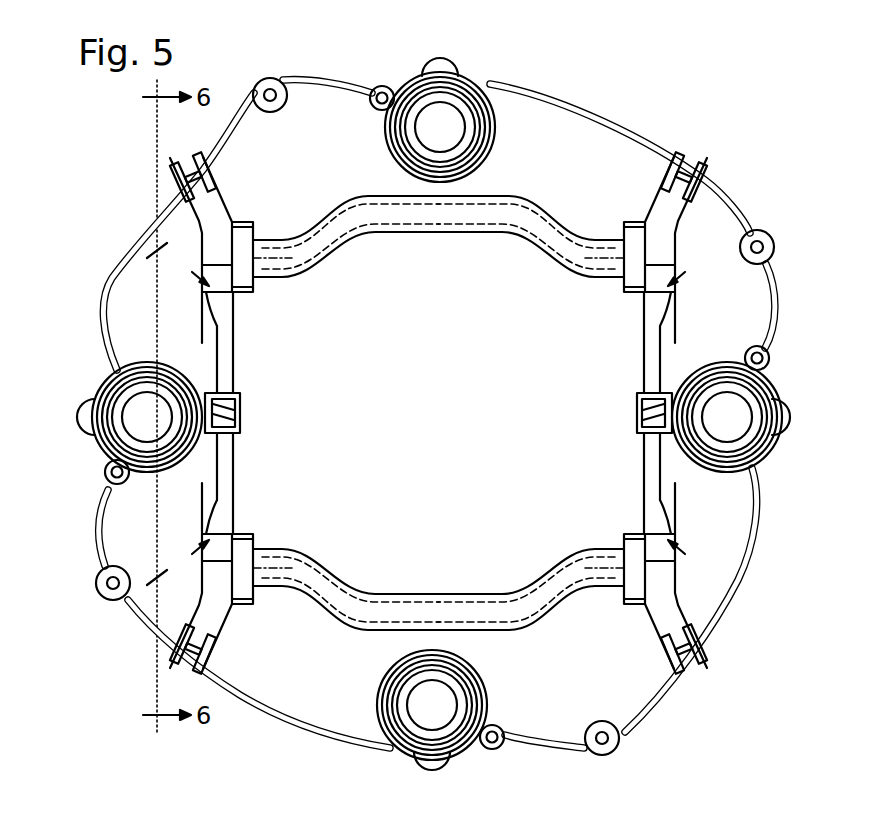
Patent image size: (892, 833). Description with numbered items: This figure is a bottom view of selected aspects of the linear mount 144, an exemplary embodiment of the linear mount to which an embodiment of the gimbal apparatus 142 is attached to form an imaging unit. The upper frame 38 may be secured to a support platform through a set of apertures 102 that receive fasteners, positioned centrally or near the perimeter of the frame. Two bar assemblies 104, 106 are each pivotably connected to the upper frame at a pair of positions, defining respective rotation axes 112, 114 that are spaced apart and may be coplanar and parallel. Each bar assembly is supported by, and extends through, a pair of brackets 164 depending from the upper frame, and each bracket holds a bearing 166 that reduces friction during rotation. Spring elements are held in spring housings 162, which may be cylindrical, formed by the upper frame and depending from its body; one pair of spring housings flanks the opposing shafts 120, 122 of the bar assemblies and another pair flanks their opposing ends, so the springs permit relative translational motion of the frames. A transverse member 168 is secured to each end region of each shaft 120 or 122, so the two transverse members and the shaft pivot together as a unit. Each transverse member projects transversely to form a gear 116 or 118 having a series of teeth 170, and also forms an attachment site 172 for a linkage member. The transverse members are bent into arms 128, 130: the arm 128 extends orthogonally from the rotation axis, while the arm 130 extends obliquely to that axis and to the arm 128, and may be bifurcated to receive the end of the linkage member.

The upper frame 38 is at (122, 312).
The apertures 102 is at (276, 101).
The bar assembly 104 is at (433, 566).
The bar assembly 106 is at (406, 276).
The rotation axis 112 is at (288, 566).
The rotation axis 114 is at (289, 263).
The gear 116 is at (247, 480).
The gear 118 is at (244, 339).
The shaft 120 is at (474, 592).
The shaft 122 is at (471, 236).
The arm 128 is at (664, 342).
The arm 130 is at (701, 184).
The gimbal apparatus embodiment 142 is at (414, 96).
The linear mount embodiment 144 is at (105, 200).
The spring housing 162 is at (468, 77).
The bracket 164 is at (242, 221).
The bearing 166 is at (243, 230).
The transverse member 168 is at (703, 239).
The teeth 170 is at (248, 415).
The attachment site 172 is at (664, 146).